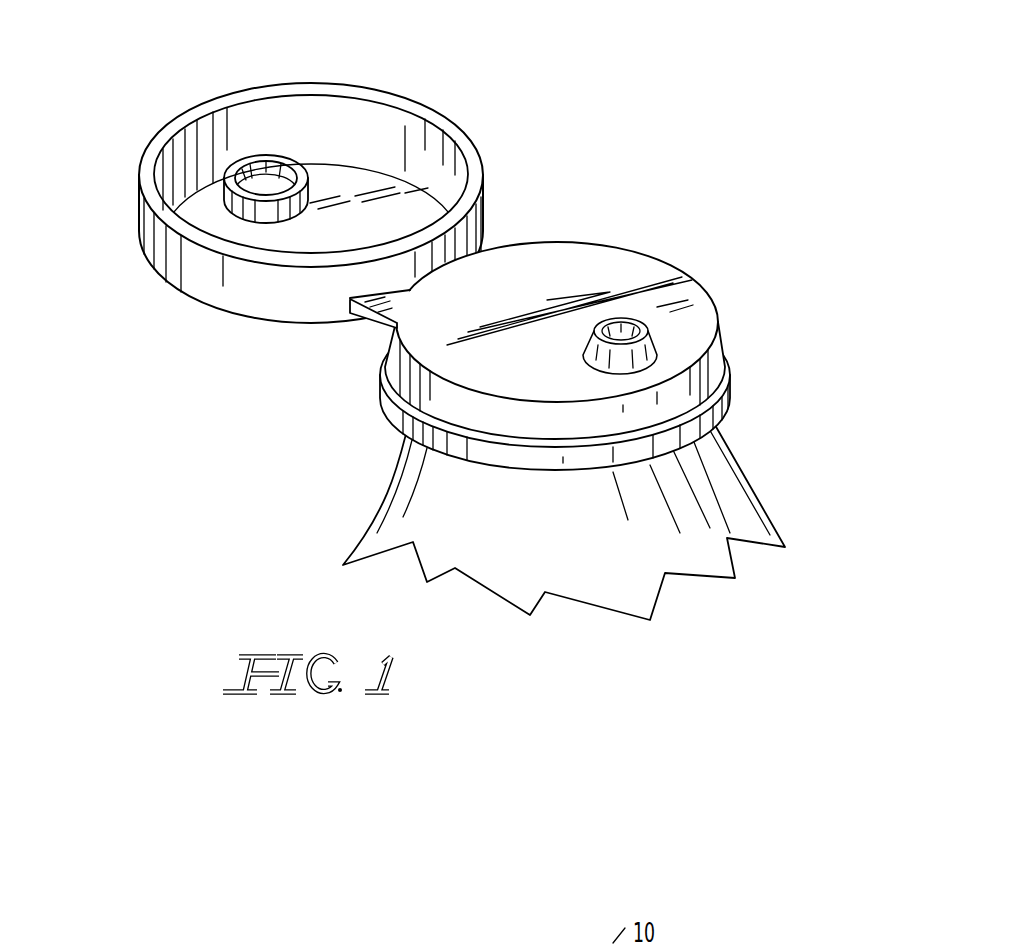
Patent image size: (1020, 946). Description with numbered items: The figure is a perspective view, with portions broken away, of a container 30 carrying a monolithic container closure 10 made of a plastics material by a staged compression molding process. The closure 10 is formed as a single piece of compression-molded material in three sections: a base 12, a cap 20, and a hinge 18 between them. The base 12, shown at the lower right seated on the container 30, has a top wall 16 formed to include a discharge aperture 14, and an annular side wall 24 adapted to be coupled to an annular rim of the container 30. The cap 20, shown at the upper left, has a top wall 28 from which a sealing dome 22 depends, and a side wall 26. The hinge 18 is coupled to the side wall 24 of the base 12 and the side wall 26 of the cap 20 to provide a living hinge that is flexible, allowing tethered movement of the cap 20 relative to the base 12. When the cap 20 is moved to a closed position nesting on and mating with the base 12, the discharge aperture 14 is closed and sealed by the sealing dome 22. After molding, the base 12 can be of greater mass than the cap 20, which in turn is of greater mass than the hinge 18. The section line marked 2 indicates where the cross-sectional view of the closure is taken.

The container closure 10 is at (462, 344).
The base 12 is at (578, 308).
The discharge aperture 14 is at (598, 335).
The top wall 16 is at (572, 267).
The hinge 18 is at (377, 328).
The cap 20 is at (311, 206).
The sealing dome 22 is at (278, 152).
The annular side wall 24 is at (550, 420).
The side wall 26 is at (257, 306).
The top wall 28 is at (420, 230).
The container 30 is at (613, 580).
The section line 2- 2 is at (218, 57).